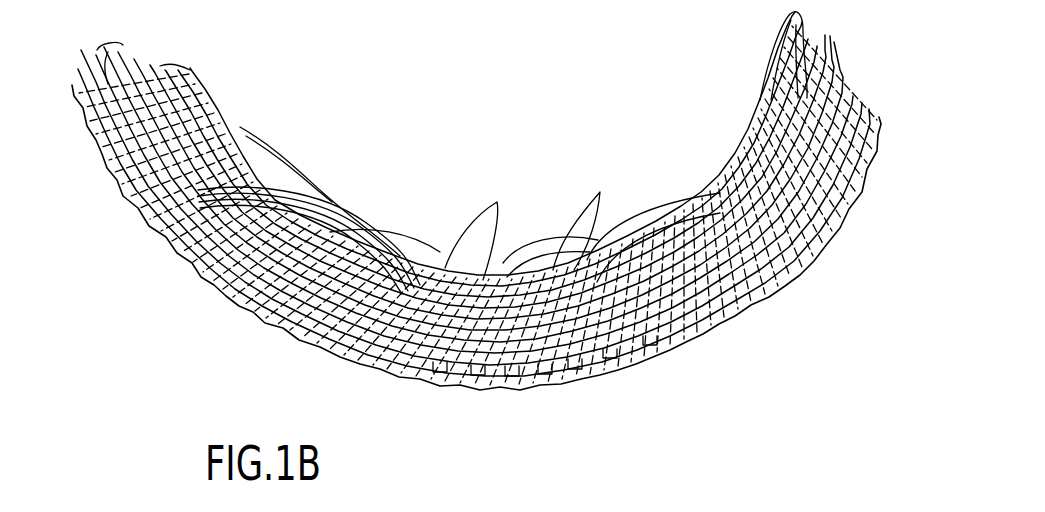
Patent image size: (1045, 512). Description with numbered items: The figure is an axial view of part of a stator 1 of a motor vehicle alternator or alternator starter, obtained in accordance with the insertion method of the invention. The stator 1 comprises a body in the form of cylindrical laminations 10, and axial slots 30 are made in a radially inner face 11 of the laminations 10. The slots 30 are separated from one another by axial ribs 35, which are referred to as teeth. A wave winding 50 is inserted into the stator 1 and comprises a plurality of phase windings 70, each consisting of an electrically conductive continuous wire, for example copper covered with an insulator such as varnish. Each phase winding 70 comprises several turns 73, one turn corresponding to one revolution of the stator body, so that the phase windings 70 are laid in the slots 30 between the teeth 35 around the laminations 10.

The stator 1 is at (548, 200).
The cylindrical laminations 10 is at (576, 386).
The radially inner face 11 is at (688, 212).
The axial slots 30 is at (445, 275).
The axial ribs 35 is at (560, 267).
The wave winding 50 is at (235, 102).
The phase windings 70 is at (337, 213).
The turns 73 is at (620, 367).